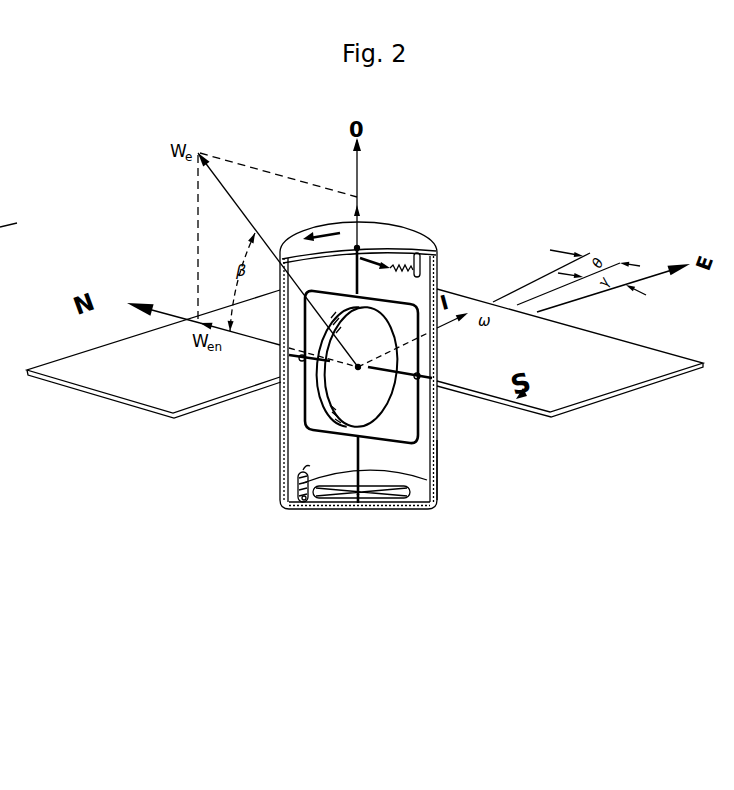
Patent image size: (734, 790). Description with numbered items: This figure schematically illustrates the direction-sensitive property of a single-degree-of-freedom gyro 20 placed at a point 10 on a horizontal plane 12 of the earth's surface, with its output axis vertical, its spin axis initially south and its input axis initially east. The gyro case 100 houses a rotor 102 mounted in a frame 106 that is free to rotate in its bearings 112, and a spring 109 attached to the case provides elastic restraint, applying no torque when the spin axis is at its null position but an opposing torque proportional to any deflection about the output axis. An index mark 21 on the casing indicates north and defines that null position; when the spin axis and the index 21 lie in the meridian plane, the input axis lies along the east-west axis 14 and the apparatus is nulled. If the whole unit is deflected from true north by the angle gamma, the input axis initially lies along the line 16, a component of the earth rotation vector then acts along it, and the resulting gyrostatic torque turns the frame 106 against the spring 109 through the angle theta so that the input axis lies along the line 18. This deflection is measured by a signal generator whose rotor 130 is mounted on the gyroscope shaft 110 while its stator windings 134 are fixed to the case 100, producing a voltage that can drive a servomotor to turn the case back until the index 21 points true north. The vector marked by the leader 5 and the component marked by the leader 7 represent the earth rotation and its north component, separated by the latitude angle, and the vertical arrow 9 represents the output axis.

The earth rotation vector We 5 is at (237, 207).
The earth rotation component Wen 7 is at (253, 318).
The vertical axis 9 is at (359, 210).
The point 10 is at (360, 370).
The horizontal plane 12 is at (562, 392).
The east-west axis 14 is at (567, 303).
The line 16 is at (533, 296).
The line 18 is at (540, 278).
The single-degree-of-freedom gyro 20 is at (457, 488).
The index mark 21 is at (310, 237).
The gyro case 100 is at (439, 257).
The rotor 102 is at (378, 408).
The frame 106 is at (311, 432).
The spring 109 is at (397, 266).
The shaft 110 is at (362, 451).
The bearings 112 is at (361, 247).
The rotor of signal generator 130 is at (324, 494).
The stator windings 134 is at (303, 501).